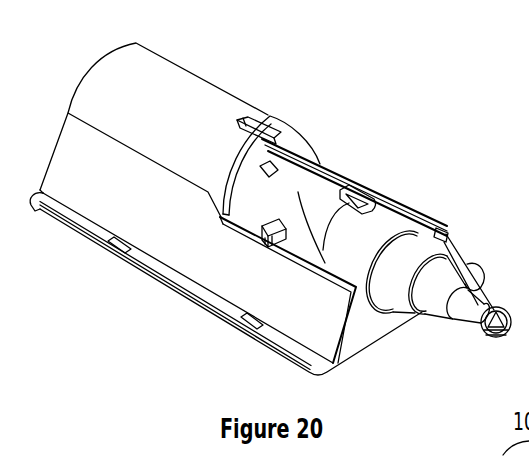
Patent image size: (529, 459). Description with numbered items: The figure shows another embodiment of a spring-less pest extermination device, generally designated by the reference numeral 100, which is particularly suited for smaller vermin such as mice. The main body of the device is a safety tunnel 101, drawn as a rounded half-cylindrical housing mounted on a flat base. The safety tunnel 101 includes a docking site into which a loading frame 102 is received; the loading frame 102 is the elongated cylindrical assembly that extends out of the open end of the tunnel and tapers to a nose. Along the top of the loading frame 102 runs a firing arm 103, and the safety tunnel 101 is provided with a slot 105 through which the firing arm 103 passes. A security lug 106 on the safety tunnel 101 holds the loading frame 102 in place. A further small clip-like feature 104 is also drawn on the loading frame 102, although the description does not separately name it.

The extermination device 100 is at (94, 43).
The safety tunnel 101 is at (152, 65).
The loading frame 102 is at (301, 200).
The firing arm 103 is at (309, 158).
The clip 104 is at (352, 190).
The slot 105 is at (272, 116).
The security lug 106 is at (266, 232).